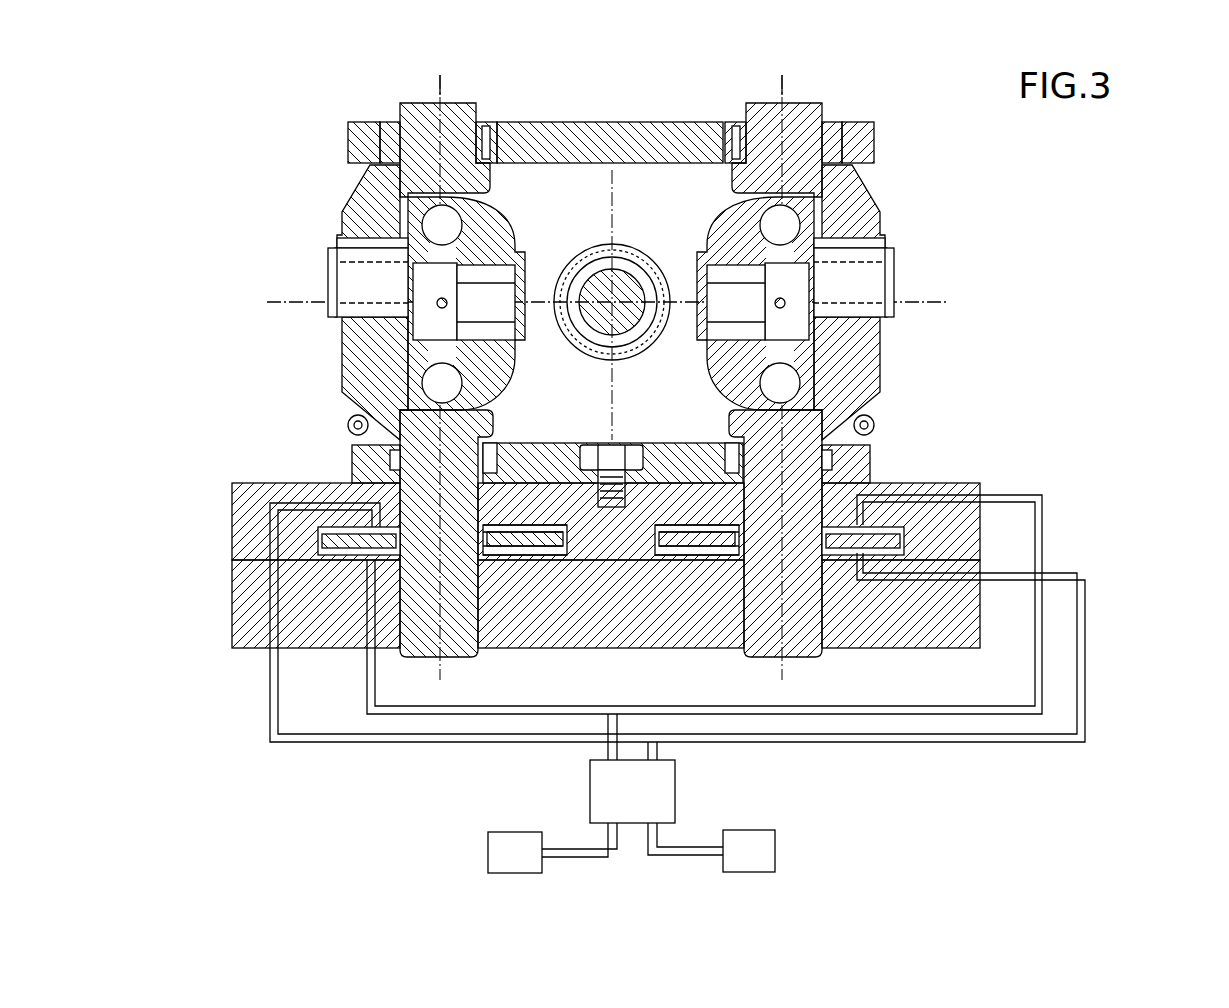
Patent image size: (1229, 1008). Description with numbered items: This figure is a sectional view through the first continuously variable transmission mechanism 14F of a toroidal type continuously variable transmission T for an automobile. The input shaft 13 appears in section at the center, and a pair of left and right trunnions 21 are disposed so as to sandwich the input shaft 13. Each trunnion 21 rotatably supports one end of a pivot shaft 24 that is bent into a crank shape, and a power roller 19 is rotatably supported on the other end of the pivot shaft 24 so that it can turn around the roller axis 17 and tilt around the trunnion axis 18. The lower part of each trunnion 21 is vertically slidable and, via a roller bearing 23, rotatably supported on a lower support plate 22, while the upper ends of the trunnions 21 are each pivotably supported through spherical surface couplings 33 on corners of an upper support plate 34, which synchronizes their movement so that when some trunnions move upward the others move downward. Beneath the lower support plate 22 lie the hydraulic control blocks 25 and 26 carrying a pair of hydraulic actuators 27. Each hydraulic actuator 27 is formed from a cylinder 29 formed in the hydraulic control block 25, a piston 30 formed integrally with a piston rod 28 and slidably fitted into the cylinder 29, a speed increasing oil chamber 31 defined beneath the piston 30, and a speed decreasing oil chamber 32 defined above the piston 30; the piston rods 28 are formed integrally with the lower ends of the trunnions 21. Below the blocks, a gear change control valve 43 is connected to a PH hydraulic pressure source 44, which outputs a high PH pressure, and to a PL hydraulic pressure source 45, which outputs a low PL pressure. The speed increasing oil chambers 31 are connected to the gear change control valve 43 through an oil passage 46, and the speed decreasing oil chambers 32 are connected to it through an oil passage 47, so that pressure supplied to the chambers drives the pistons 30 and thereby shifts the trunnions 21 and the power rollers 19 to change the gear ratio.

The input shaft 13 is at (628, 333).
The first continuously variable transmission mechanism 14F is at (268, 217).
The roller axis 17 is at (278, 300).
The trunnion axis 18 is at (438, 91).
The power roller 19 is at (474, 245).
The trunnion 21 is at (365, 202).
The lower support plate 22 is at (560, 443).
The roller bearing 23 is at (493, 445).
The pivot shaft 24 is at (332, 298).
The hydraulic control block 25 is at (973, 532).
The hydraulic control block 26 is at (972, 617).
The hydraulic actuator 27 is at (396, 565).
The piston rod 28 is at (432, 565).
The cylinder 29 is at (560, 548).
The piston 30 is at (540, 525).
The speed increasing oil chamber 31 is at (515, 558).
The speed decreasing oil chamber 32 is at (490, 532).
The spherical surface coupling 33 is at (366, 130).
The upper support plate 34 is at (612, 130).
The gear change control valve 43 is at (621, 802).
The PH hydraulic pressure source 44 is at (488, 852).
The PL hydraulic pressure source 45 is at (775, 846).
The oil passage 46 is at (367, 675).
The oil passage 47 is at (270, 690).
The toroidal type continuously variable transmission T is at (1010, 283).